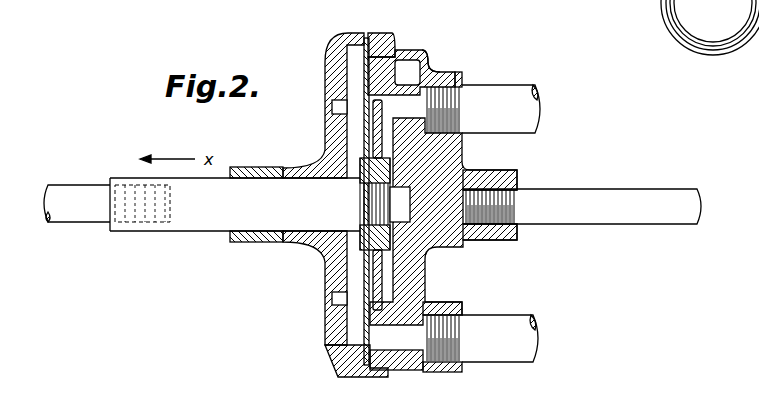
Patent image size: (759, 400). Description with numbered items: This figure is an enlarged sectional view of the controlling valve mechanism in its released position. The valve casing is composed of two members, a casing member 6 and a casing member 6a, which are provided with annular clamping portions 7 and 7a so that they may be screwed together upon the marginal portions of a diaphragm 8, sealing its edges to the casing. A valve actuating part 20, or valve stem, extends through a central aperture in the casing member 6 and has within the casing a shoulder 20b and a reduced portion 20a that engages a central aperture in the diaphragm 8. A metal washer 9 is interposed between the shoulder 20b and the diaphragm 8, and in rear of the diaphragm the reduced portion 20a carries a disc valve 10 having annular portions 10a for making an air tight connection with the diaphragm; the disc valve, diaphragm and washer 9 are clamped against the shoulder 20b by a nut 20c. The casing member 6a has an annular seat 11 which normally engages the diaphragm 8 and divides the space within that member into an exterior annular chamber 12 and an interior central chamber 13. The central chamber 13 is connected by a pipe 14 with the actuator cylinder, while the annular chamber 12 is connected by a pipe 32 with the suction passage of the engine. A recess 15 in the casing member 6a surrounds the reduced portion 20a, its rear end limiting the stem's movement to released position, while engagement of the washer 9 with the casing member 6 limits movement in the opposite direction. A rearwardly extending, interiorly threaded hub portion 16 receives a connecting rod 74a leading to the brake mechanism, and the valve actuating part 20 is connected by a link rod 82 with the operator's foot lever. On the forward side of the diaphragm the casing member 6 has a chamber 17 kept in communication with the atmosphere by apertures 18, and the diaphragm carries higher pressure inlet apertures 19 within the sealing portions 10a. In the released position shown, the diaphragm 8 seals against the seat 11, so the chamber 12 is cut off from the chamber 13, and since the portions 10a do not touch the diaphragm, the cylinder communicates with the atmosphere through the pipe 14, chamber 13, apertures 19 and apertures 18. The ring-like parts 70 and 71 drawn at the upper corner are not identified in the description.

The casing member 6 is at (330, 53).
The casing member 6a is at (428, 62).
The annular clamping portion 7 is at (350, 33).
The annular clamping portion 7a is at (380, 46).
The diaphragm 8 is at (364, 75).
The metal washer 9 is at (371, 250).
The disc valve 10 is at (392, 278).
The annular portions 10a is at (383, 103).
The annular seat 11 is at (418, 62).
The exterior annular chamber 12 is at (407, 348).
The interior central chamber 13 is at (428, 296).
The pipe 14 is at (528, 112).
The recess 15 is at (468, 232).
The hub portion 16 is at (517, 170).
The chamber 17 is at (358, 264).
The apertures 18 is at (332, 108).
The higher pressure inlet apertures 19 is at (373, 130).
The valve actuating part 20 is at (205, 222).
The reduced portion 20a is at (412, 222).
The shoulder 20b is at (362, 186).
The nut 20c is at (398, 188).
The pipe 32 is at (533, 346).
The ring 70 is at (675, 7).
The inner ring 71 is at (665, 7).
The connecting rod 74a is at (607, 190).
The link rod 82 is at (88, 218).